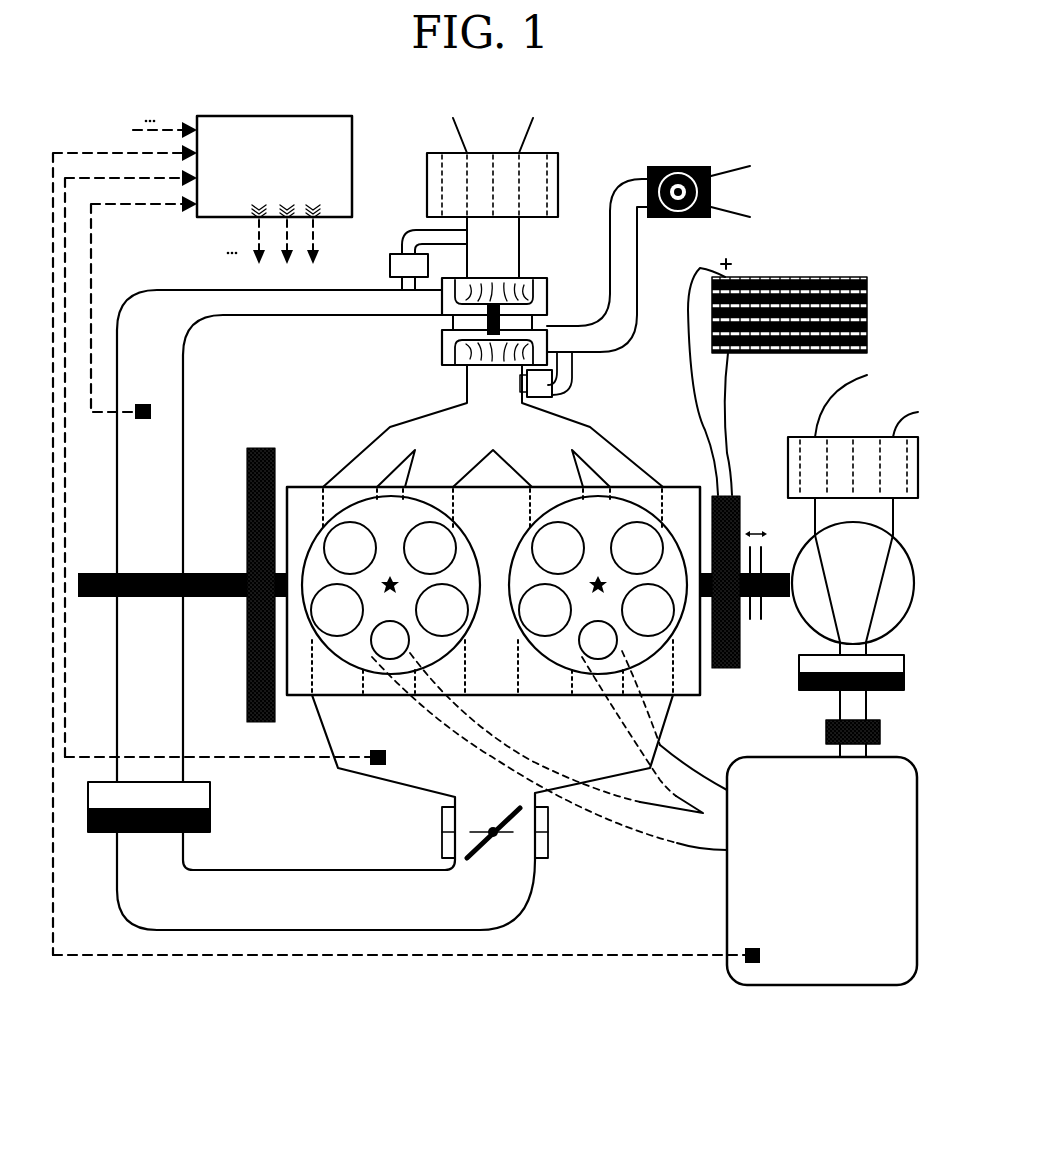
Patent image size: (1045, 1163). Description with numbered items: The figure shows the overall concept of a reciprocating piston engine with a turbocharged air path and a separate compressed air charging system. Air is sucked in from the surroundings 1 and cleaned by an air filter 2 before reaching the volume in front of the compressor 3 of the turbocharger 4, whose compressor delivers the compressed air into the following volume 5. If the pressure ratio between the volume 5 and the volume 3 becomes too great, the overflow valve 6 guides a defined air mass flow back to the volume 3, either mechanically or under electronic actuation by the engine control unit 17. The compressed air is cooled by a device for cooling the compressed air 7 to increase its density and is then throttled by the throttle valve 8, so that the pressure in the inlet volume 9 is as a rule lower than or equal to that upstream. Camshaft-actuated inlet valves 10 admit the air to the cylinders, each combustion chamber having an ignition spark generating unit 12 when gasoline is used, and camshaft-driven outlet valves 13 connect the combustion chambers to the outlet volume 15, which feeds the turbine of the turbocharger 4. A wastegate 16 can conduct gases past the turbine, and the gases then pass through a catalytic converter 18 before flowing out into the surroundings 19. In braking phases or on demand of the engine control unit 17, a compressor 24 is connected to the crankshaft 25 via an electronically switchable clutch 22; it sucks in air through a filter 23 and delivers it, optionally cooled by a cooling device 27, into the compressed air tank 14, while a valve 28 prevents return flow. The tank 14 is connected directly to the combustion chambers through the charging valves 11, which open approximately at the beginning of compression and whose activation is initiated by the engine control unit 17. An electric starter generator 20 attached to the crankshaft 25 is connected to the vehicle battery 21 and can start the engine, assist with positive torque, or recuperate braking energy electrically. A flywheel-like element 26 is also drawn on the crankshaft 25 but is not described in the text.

The surroundings 1 is at (493, 135).
The air filter 2 is at (492, 185).
The volume in front of the compressor 3 is at (493, 247).
The turbocharger 4 is at (500, 321).
The volume in the air path 5 is at (395, 610).
The overflow valve 6 is at (419, 260).
The device for cooling the compressed air 7 is at (141, 807).
The throttle valve 8 is at (495, 833).
The inlet volume 9 is at (242, 760).
The inlet valves 10 is at (492, 610).
The charging valves 11 is at (549, 735).
The ignition spark generating unit 12 is at (483, 586).
The outlet valves 13 is at (493, 591).
The compressed air tank 14 is at (485, 871).
The outlet volume 15 is at (493, 426).
The wastegate 16 is at (547, 379).
The engine control unit 17 is at (202, 535).
The catalytic converter 18 is at (629, 246).
The surroundings 19 is at (730, 191).
The electric starter generator 20 is at (726, 595).
The vehicle battery 21 is at (777, 374).
The electronically switchable clutch 22 is at (759, 588).
The filter 23 is at (839, 436).
The compressor 24 is at (853, 576).
The crankshaft 25 is at (434, 594).
The flywheel 26 is at (260, 600).
The cooling device 27 is at (866, 687).
The valve 28 is at (871, 738).